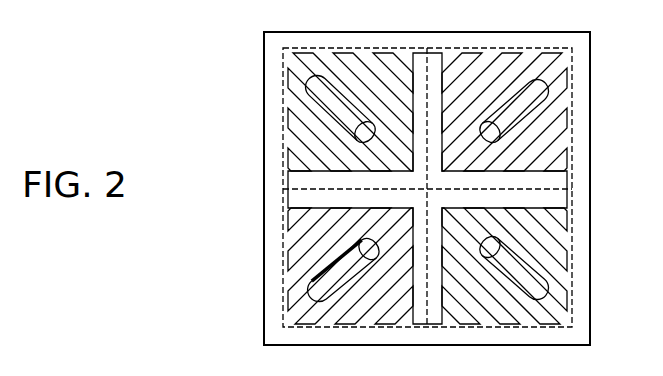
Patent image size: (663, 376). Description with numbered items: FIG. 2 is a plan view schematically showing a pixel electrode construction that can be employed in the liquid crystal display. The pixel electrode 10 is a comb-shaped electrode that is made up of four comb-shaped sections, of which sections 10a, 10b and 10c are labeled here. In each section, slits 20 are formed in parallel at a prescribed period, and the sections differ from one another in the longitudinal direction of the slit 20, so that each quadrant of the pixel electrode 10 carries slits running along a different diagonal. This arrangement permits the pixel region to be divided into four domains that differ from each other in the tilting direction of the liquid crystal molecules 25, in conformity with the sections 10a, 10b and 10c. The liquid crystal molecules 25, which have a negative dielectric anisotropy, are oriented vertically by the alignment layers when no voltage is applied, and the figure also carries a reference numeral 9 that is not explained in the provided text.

The semiconductor substrate 9 is at (264, 68).
The pixel electrode 10 is at (574, 181).
The section 10a is at (285, 110).
The section 10b is at (285, 264).
The section 10c is at (574, 113).
The slit 20 is at (570, 270).
The liquid crystal molecules 25 is at (536, 97).